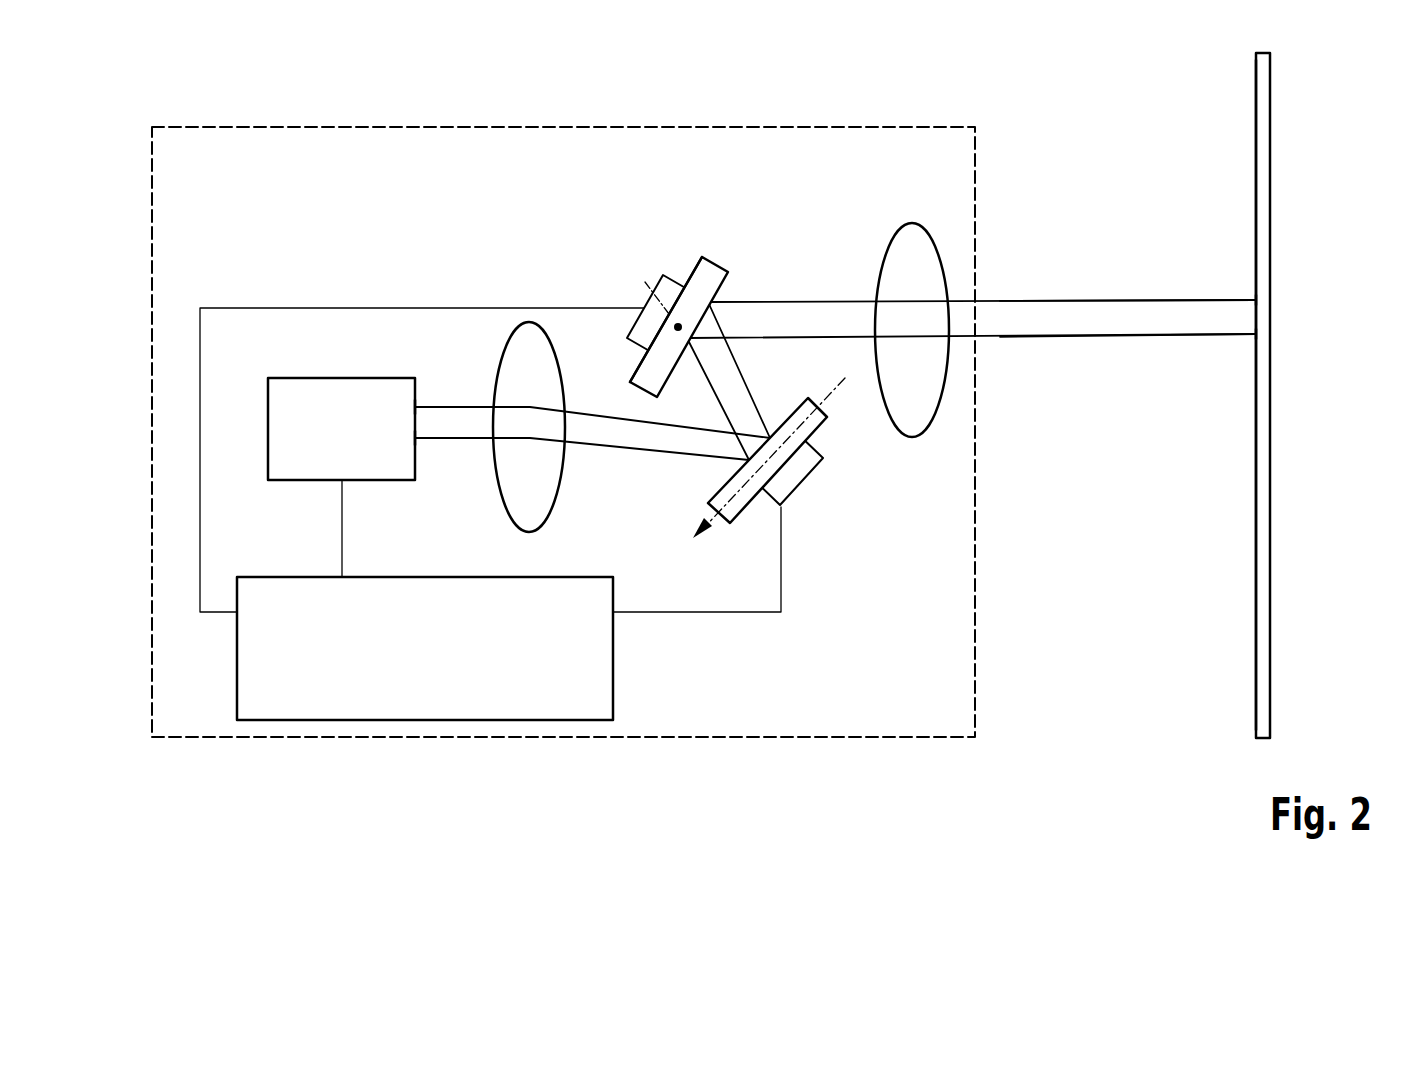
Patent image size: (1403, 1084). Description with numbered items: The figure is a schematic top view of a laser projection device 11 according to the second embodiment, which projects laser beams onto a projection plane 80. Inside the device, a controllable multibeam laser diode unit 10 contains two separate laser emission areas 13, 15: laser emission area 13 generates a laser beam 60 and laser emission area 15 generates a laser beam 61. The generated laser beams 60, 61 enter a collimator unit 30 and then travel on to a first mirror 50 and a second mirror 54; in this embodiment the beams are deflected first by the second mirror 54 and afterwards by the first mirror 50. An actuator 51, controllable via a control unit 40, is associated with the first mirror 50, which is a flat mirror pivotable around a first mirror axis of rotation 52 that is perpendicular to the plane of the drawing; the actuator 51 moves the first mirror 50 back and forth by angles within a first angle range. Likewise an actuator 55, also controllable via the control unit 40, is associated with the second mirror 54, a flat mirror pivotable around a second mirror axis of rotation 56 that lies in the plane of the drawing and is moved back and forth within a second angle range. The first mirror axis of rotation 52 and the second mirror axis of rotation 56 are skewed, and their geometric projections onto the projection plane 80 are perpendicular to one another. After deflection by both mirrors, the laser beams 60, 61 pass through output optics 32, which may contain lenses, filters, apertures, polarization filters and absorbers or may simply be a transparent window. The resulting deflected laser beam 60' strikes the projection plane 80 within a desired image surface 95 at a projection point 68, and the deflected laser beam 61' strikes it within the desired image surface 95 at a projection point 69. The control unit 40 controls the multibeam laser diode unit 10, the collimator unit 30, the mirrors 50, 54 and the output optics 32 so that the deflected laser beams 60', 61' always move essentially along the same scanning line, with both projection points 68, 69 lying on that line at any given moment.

The multibeam laser diode unit 10 is at (332, 377).
The laser projection device 11 is at (707, 125).
The laser emission area 13 is at (423, 405).
The laser emission area 15 is at (423, 443).
The collimator unit 30 is at (552, 513).
The output optics 32 is at (885, 247).
The control unit 40 is at (613, 677).
The first mirror 50 is at (717, 260).
The actuator 51 is at (675, 280).
The first mirror axis of rotation 52 is at (647, 277).
The second mirror 54 is at (812, 436).
The actuator 55 is at (790, 500).
The second mirror axis of rotation 56 is at (848, 393).
The laser beam 60 is at (835, 369).
The laser beam 61 is at (835, 428).
The deflected laser beam 60' is at (1128, 264).
The deflected laser beam 61' is at (1128, 372).
The projection point 68 is at (1256, 299).
The projection point 69 is at (1253, 334).
The projection plane 80 is at (1256, 117).
The desired image surface 95 is at (1256, 212).